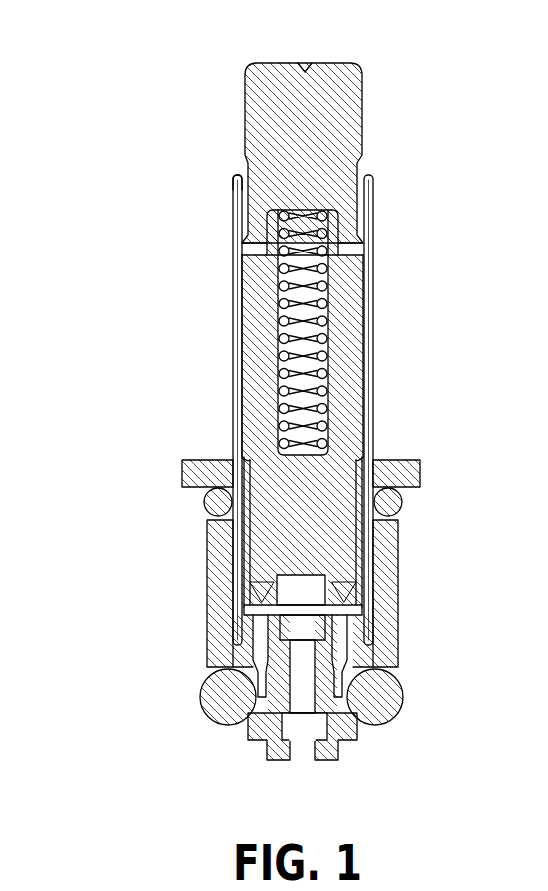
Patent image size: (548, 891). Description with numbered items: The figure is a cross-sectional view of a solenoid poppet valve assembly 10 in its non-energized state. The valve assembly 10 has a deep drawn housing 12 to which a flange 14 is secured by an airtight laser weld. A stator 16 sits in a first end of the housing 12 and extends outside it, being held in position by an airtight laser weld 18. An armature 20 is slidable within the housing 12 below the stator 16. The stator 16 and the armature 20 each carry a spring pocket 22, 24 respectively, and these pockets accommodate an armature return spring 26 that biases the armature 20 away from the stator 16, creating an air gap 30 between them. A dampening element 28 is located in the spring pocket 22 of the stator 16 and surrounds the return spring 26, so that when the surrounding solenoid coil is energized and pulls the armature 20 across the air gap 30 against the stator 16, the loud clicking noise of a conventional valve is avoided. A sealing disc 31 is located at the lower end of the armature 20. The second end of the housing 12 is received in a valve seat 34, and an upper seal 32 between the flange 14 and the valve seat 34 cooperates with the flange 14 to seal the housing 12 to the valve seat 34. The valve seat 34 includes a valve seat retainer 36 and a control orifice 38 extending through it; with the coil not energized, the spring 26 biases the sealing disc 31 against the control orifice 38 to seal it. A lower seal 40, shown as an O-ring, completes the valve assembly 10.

The valve assembly 10 is at (199, 81).
The housing 12 is at (237, 270).
The flange 14 is at (205, 473).
The stator 16 is at (353, 85).
The laser weld 18 is at (230, 192).
The armature 20 is at (253, 322).
The spring pocket 22 is at (308, 226).
The spring pocket 24 is at (312, 447).
The return spring 26 is at (322, 297).
The dampening element 28 is at (350, 224).
The air gap 30 is at (353, 248).
The sealing disc 31 is at (303, 583).
The upper seal 32 is at (392, 498).
The valve seat 34 is at (197, 554).
The valve seat retainer 36 is at (325, 647).
The control orifice 38 is at (300, 623).
The lower seal 40 is at (387, 697).